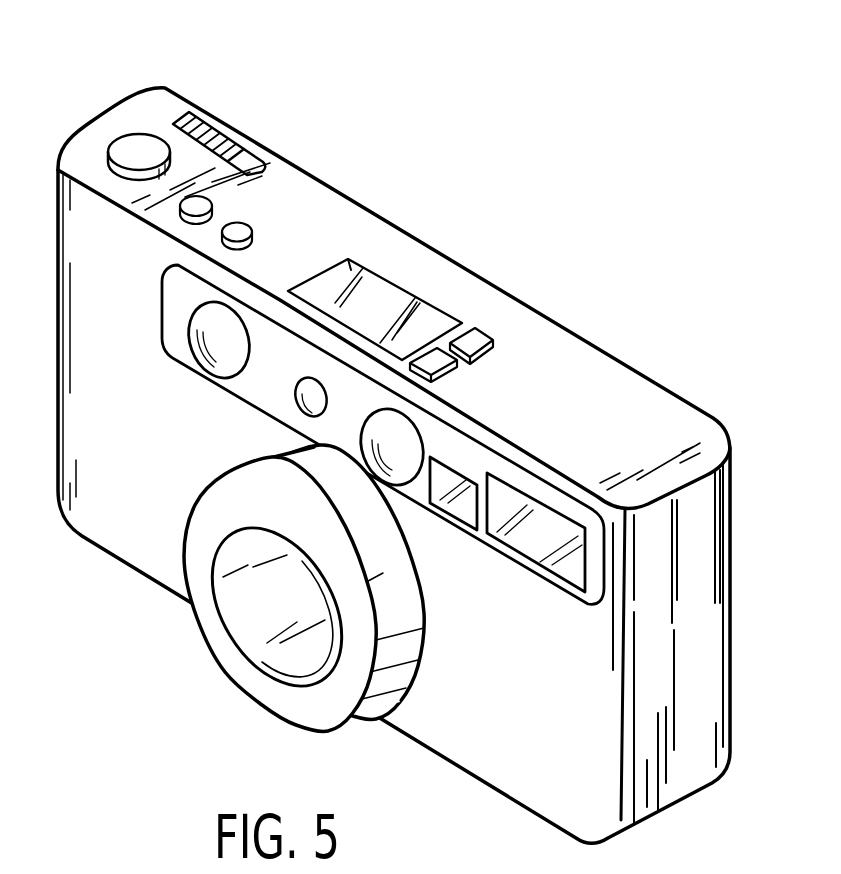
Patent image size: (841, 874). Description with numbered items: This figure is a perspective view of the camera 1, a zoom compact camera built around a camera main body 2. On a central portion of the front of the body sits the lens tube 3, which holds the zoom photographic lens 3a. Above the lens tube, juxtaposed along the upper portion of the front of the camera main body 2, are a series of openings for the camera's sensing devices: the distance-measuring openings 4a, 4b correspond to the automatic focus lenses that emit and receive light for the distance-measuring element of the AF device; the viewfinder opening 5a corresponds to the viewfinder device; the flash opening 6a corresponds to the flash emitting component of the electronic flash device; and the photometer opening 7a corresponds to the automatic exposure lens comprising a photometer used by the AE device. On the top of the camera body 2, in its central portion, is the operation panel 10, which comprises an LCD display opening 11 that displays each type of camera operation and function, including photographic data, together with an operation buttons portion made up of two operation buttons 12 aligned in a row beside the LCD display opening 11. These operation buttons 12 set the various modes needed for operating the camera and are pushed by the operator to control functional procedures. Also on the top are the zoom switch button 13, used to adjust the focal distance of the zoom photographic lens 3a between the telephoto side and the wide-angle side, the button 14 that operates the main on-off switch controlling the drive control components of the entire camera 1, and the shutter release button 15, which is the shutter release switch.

The camera 1 is at (637, 315).
The camera main body 2 is at (716, 686).
The lens tube 3 is at (208, 614).
The zoom photographic lens 3a is at (270, 617).
The distance-measuring opening 4a is at (200, 340).
The distance-measuring opening 4b is at (408, 432).
The viewfinder opening 5a is at (457, 473).
The flash opening 6a is at (548, 510).
The photometer opening 7a is at (304, 399).
The operation panel 10 is at (327, 290).
The LCD display opening 11 is at (349, 257).
The operation buttons 12 is at (473, 332).
The zoom switch button 13 is at (249, 228).
The main switch button 14 is at (211, 119).
The shutter release button 15 is at (124, 148).